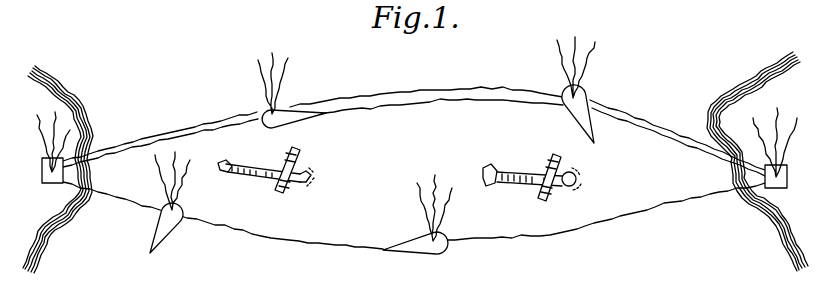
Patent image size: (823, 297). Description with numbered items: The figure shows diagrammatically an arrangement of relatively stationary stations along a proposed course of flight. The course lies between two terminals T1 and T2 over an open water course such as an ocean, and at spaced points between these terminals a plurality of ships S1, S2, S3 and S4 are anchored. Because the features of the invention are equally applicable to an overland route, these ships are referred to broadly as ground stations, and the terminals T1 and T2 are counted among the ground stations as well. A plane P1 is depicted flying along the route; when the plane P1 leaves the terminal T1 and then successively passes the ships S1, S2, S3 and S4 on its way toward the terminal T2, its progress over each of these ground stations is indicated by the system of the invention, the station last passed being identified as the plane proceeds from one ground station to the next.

The terminal T1 is at (46, 161).
The terminal T2 is at (780, 160).
The ship S1 is at (175, 203).
The ship S2 is at (292, 90).
The ship S3 is at (423, 222).
The ship S4 is at (585, 90).
The plane P1 is at (297, 152).